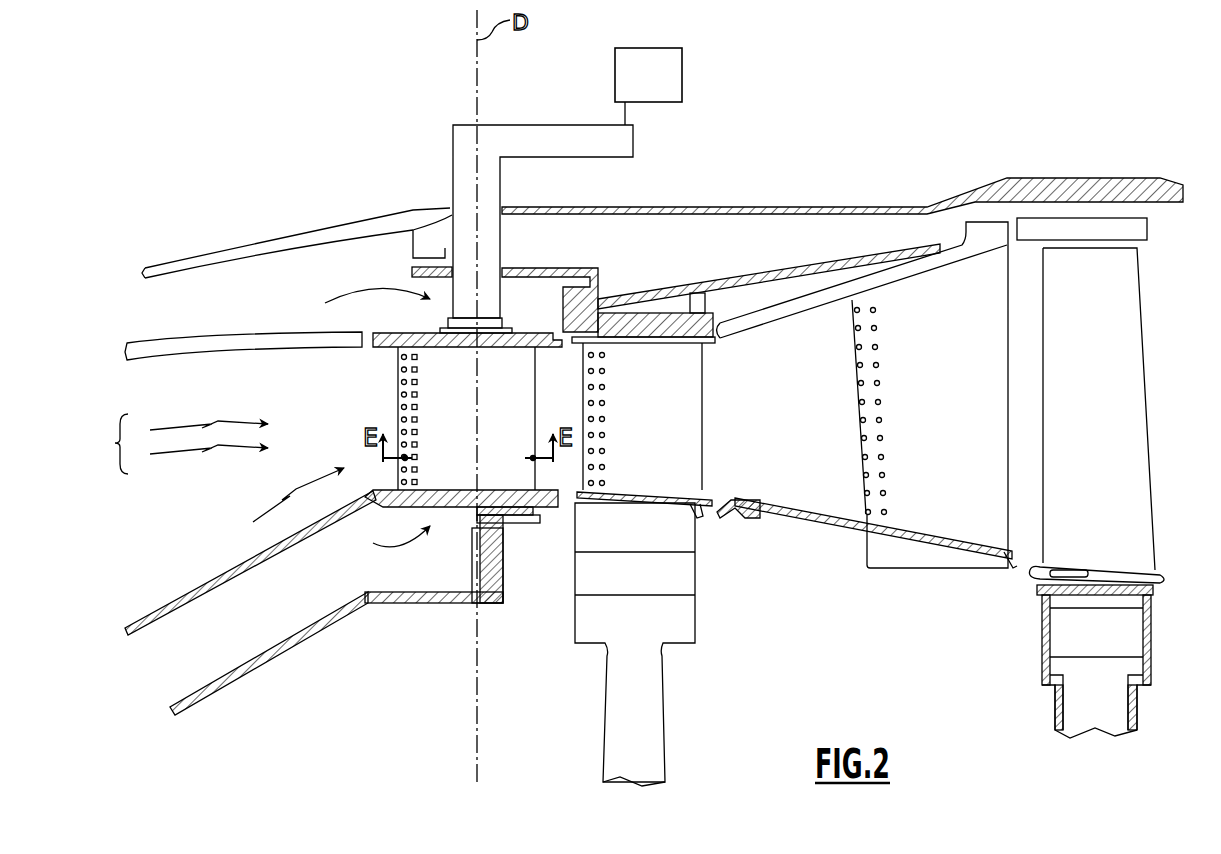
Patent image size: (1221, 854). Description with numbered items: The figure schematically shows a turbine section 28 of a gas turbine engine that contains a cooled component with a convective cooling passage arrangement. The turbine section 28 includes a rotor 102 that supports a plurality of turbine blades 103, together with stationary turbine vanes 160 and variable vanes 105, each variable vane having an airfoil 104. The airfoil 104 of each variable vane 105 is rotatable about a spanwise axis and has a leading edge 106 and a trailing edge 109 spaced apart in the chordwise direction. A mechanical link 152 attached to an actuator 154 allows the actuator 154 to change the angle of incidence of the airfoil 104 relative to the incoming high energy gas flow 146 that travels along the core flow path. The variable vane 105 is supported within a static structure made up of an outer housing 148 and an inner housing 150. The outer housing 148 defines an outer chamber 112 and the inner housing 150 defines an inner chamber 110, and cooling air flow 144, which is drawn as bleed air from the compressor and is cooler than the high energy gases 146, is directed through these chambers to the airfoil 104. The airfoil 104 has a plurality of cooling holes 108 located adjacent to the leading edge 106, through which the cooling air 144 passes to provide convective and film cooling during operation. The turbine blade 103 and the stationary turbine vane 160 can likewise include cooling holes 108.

The turbine section 28 is at (808, 96).
The rotor 102 is at (643, 717).
The turbine blade 103 is at (670, 432).
The airfoil 104 is at (400, 386).
The variable vane 105 is at (275, 503).
The leading edge 106 is at (398, 403).
The cooling holes 108 is at (402, 410).
The trailing edge 109 is at (588, 373).
The inner chamber 110 is at (460, 578).
The outer chamber 112 is at (382, 271).
The cooling air flow 144 is at (382, 290).
The high energy gas flow 146 is at (165, 444).
The outer housing 148 is at (502, 270).
The inner housing 150 is at (450, 604).
The mechanical link 152 is at (594, 145).
The actuator 154 is at (682, 72).
The stationary turbine vane 160 is at (912, 330).